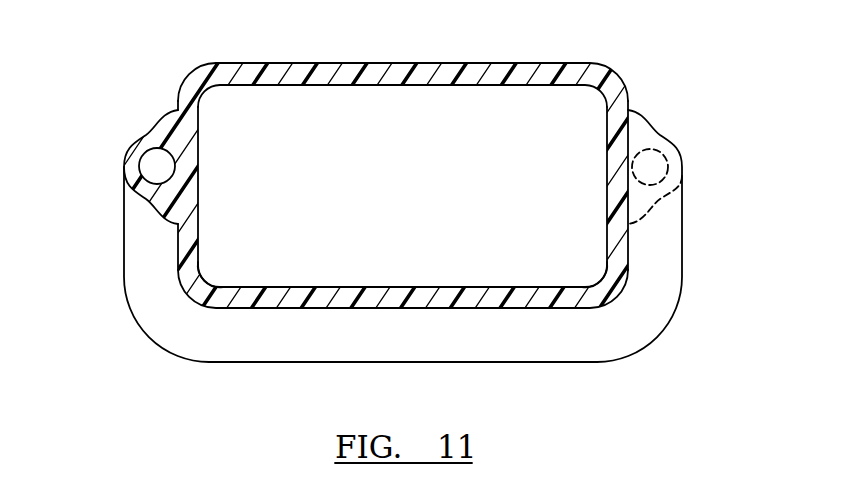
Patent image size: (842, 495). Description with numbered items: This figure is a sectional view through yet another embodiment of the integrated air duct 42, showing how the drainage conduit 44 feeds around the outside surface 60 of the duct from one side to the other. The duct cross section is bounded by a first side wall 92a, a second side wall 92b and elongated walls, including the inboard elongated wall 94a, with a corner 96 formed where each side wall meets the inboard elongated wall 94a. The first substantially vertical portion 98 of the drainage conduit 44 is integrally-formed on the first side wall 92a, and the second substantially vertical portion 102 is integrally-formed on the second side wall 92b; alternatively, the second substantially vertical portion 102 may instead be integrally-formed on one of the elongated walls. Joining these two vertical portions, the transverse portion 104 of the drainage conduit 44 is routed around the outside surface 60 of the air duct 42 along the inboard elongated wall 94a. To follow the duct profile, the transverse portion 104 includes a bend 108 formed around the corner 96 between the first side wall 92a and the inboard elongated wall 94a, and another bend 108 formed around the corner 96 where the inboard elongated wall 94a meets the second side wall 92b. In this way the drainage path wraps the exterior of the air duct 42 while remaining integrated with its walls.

The integrated air duct 42 is at (397, 220).
The drainage conduit 44 is at (166, 126).
The first substantially vertical portion 98 is at (125, 168).
The second substantially vertical portion 102 is at (682, 166).
The first side wall 92a is at (177, 250).
The second side wall 92b is at (628, 247).
The corner 96 is at (207, 277).
The bend 108 is at (143, 326).
The transverse portion 104 is at (255, 335).
The outside surface 60 is at (338, 310).
The inboard elongated wall 94a is at (540, 310).